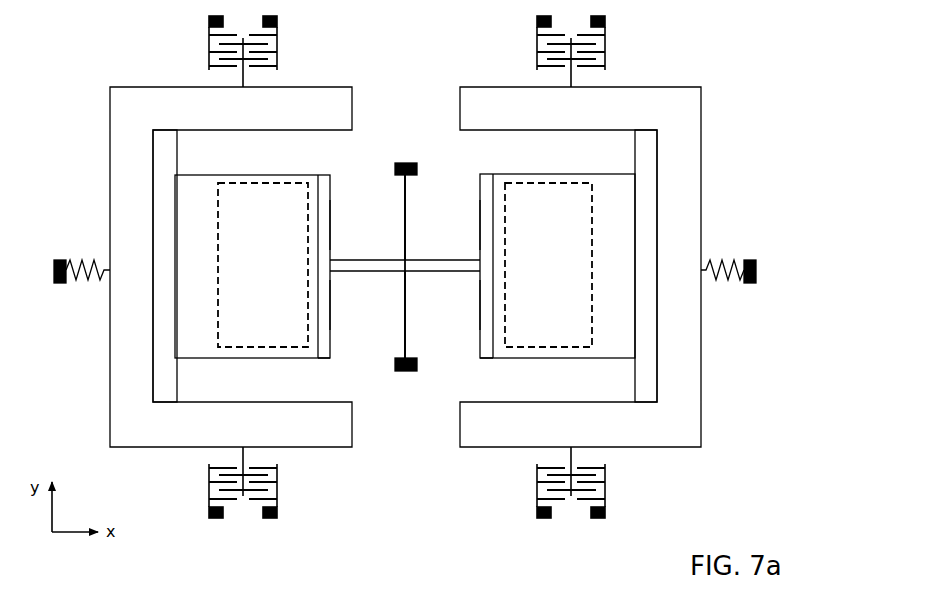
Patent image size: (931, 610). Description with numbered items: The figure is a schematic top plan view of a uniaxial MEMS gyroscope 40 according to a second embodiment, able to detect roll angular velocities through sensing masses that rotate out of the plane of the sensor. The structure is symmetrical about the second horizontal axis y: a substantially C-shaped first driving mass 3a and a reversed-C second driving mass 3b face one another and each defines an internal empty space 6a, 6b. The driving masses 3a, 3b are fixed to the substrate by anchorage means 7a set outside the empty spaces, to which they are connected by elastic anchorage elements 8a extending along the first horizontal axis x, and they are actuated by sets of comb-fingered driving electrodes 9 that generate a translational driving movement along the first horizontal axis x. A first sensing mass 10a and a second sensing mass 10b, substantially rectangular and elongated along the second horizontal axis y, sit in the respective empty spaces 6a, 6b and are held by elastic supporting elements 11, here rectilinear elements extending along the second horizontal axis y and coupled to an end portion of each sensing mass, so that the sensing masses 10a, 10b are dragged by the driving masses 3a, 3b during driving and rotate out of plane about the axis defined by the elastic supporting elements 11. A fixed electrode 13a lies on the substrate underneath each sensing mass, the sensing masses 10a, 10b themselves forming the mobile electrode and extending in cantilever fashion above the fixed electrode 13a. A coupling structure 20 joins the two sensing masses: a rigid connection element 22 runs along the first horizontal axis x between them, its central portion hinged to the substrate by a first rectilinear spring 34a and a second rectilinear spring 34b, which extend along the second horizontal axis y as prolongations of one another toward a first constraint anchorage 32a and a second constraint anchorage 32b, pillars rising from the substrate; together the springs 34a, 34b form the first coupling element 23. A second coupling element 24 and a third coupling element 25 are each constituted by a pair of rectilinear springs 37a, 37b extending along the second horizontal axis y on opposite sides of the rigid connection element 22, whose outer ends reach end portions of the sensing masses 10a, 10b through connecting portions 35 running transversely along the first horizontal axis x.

The first driving mass 3a is at (130, 122).
The second driving mass 3b is at (667, 97).
The empty space of first driving mass 6a is at (282, 136).
The empty space of second driving mass 6b is at (472, 136).
The anchorage means 7a is at (54, 270).
The elastic anchorage elements 8a is at (85, 276).
The driving electrodes 9 is at (306, 48).
The first sensing mass 10a is at (300, 175).
The second sensing mass 10b is at (555, 175).
The elastic supporting elements 11 is at (177, 150).
The fixed electrode 13a is at (268, 347).
The coupling structure 20 is at (382, 140).
The rigid connection element 22 is at (420, 266).
The first coupling element 23 is at (400, 152).
The second coupling element 24 is at (339, 201).
The third coupling element 25 is at (471, 199).
The first constraint anchorage 32a is at (412, 163).
The second constraint anchorage 32b is at (405, 372).
The first rectilinear spring 34a is at (405, 195).
The second rectilinear spring 34b is at (405, 288).
The connecting portions 35 is at (330, 358).
The rectilinear spring 37a is at (330, 228).
The rectilinear spring 37b is at (330, 318).
The MEMS gyroscope 40 is at (744, 123).